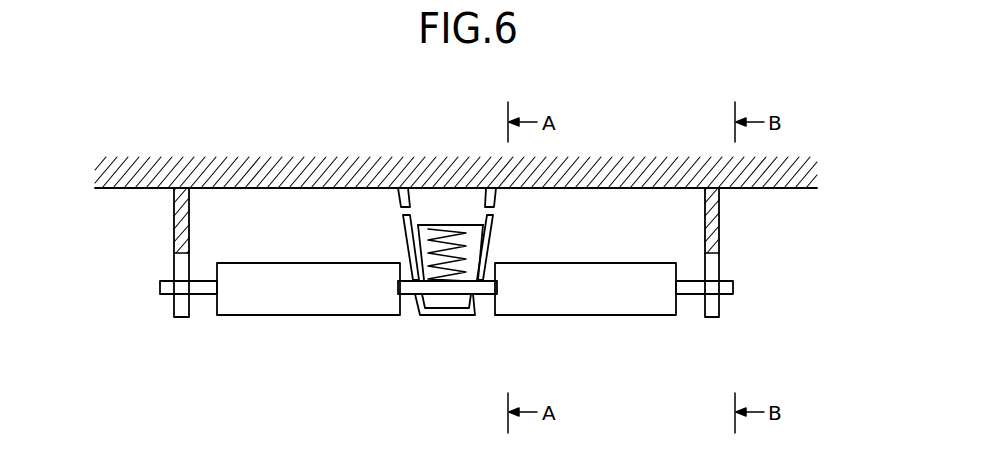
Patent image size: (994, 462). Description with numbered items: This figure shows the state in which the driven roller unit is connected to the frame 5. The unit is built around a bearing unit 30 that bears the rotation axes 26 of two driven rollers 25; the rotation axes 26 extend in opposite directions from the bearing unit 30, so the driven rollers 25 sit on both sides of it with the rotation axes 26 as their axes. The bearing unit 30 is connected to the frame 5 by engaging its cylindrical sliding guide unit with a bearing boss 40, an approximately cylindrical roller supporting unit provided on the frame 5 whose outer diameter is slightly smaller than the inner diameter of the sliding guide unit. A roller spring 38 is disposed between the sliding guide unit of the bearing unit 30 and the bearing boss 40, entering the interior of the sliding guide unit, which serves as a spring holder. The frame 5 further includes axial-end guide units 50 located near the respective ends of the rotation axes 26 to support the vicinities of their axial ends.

The frame 5 is at (113, 189).
The axial-end guide unit 50 is at (174, 229).
The rotation axis 26 is at (203, 303).
The driven roller 25 is at (305, 316).
The bearing unit 30 is at (489, 290).
The bearing boss 40 is at (470, 230).
The roller spring 38 is at (463, 254).